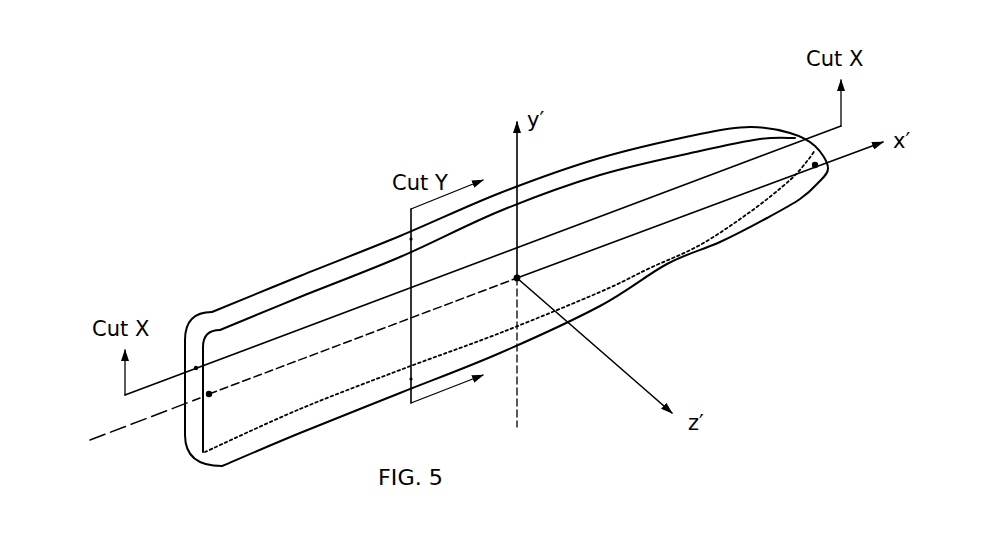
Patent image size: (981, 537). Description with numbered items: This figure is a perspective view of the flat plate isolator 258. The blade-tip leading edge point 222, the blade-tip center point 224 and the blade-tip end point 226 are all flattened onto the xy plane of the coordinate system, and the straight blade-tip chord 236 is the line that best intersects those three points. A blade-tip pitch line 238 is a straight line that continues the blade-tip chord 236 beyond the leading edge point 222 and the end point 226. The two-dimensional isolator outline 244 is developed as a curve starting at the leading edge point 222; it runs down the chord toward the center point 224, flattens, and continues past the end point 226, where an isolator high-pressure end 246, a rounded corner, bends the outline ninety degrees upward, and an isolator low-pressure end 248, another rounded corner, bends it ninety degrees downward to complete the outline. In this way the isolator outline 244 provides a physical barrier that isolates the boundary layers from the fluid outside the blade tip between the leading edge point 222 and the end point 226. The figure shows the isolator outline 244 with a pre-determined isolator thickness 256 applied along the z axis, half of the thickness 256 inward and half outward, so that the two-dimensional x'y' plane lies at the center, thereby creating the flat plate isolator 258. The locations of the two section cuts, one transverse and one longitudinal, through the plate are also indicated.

The blade-tip leading edge point 222 is at (822, 168).
The blade-tip center point 224 is at (522, 279).
The blade-tip end point 226 is at (208, 397).
The blade-tip chord 236 is at (302, 357).
The blade-tip pitch line 238 is at (122, 422).
The isolator outline 244 is at (632, 148).
The isolator high-pressure end 246 is at (199, 452).
The isolator low-pressure end 248 is at (187, 330).
The isolator thickness 256 is at (379, 297).
The flat plate isolator 258 is at (687, 148).